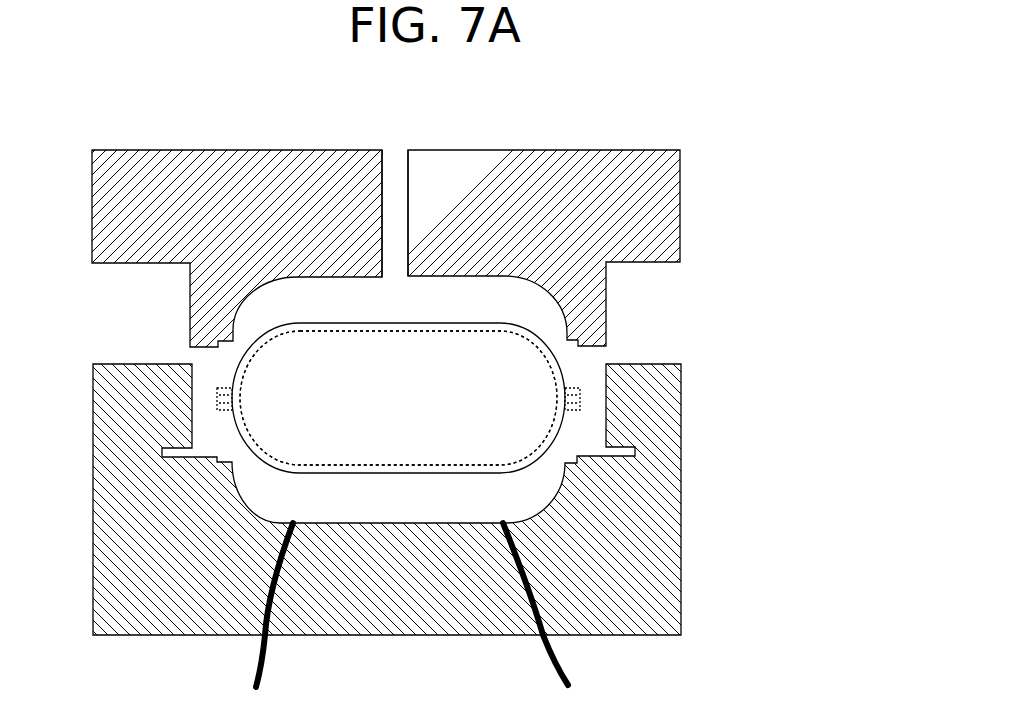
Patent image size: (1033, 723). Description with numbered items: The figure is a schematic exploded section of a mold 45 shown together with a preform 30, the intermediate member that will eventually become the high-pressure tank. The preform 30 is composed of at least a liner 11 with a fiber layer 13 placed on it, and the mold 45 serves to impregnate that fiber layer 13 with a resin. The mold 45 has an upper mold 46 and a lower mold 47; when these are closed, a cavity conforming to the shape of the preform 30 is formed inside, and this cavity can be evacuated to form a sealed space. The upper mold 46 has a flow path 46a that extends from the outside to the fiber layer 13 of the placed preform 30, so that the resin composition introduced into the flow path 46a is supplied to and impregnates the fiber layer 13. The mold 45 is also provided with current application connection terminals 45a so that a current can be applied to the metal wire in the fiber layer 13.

The mold 45 is at (485, 355).
The upper mold 46 is at (689, 197).
The flow path 46a is at (392, 158).
The lower mold 47 is at (695, 398).
The current application connection terminals 45a is at (280, 670).
The preform 30 is at (579, 364).
The fiber layer 13 is at (310, 328).
The liner 11 is at (383, 357).